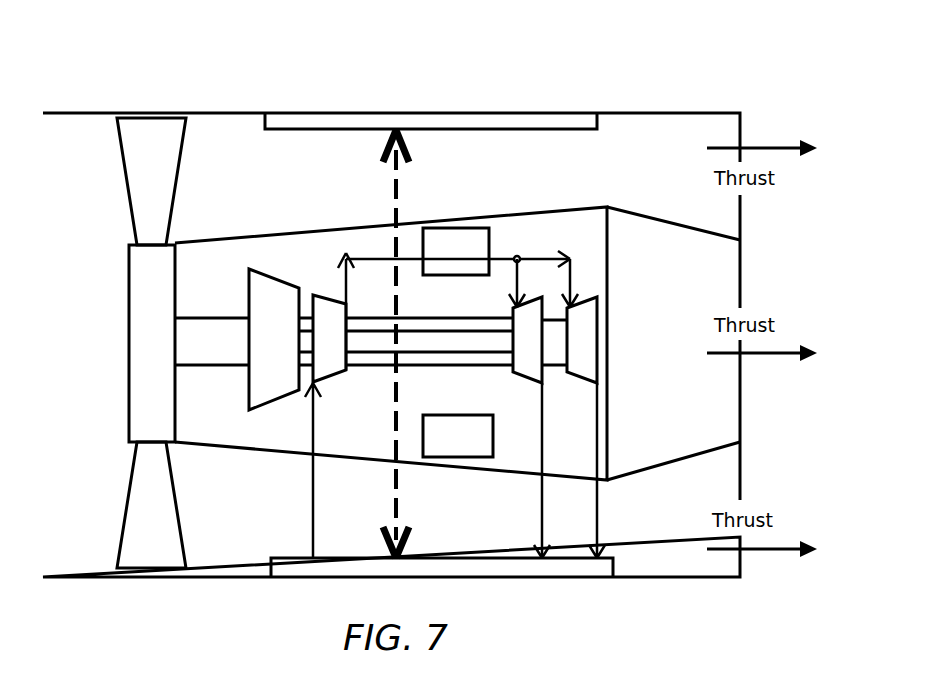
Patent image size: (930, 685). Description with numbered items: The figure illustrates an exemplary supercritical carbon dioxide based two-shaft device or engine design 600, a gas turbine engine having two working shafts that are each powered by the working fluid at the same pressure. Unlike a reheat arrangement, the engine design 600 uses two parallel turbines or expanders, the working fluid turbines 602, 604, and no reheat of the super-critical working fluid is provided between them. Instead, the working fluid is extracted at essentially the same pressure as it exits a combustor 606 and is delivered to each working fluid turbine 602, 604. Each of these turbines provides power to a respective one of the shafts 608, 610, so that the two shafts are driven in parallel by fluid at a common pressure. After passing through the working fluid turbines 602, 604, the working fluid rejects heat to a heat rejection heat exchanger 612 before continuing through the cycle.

The two-shaft device or engine design 600 is at (607, 82).
The working fluid turbine 602 is at (533, 293).
The working fluid turbine 604 is at (587, 293).
The combustor 606 is at (461, 227).
The shaft 608 is at (438, 352).
The shaft 610 is at (207, 368).
The heat rejection heat exchanger 612 is at (518, 578).